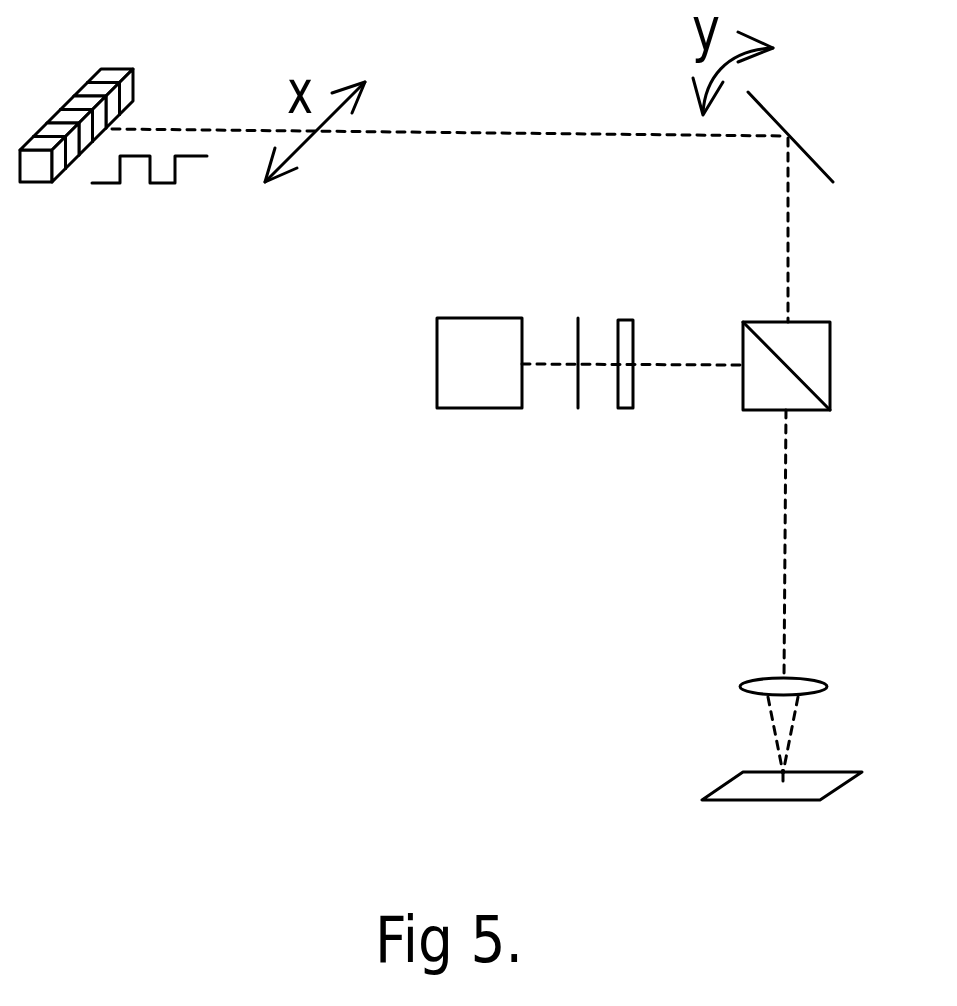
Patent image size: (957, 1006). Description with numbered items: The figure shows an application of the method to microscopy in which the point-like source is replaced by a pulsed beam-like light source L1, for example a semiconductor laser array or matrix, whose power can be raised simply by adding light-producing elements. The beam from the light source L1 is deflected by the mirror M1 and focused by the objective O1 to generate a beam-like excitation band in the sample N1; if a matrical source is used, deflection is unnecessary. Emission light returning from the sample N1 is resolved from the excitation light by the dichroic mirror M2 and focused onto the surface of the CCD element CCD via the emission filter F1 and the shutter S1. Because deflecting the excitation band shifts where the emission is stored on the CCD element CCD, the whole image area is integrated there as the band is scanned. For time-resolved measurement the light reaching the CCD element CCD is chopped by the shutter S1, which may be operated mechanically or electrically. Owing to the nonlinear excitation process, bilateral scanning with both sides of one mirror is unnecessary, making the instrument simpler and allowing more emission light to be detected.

The pulsed beam-like light source L1 is at (113, 157).
The mirror M1 is at (827, 137).
The dichroic mirror M2 is at (823, 366).
The CCD element CCD is at (479, 363).
The shutter S1 is at (574, 390).
The emission filter F1 is at (626, 339).
The objective O1 is at (817, 725).
The sample N1 is at (782, 820).